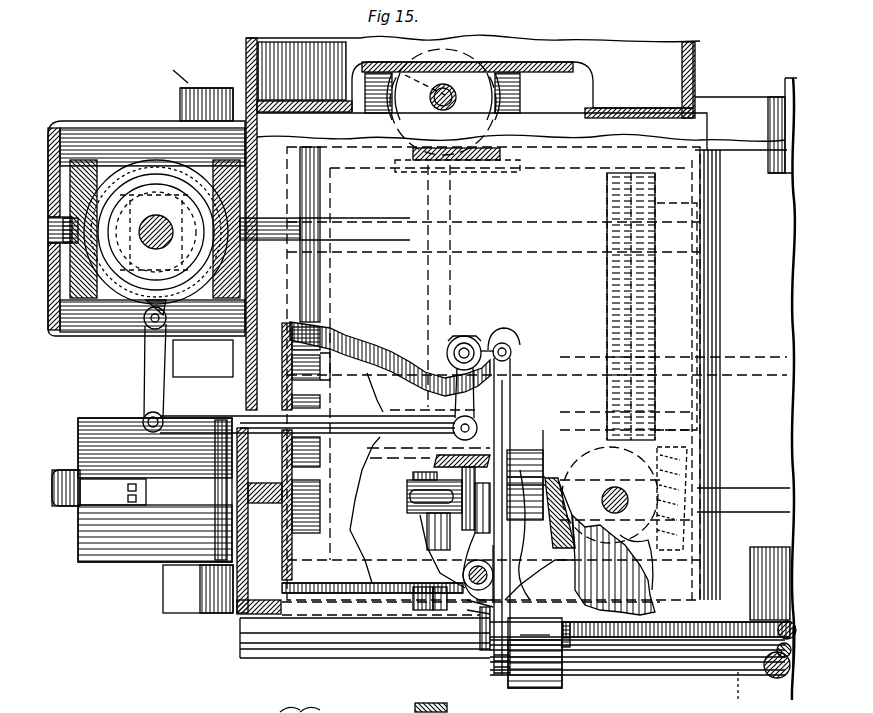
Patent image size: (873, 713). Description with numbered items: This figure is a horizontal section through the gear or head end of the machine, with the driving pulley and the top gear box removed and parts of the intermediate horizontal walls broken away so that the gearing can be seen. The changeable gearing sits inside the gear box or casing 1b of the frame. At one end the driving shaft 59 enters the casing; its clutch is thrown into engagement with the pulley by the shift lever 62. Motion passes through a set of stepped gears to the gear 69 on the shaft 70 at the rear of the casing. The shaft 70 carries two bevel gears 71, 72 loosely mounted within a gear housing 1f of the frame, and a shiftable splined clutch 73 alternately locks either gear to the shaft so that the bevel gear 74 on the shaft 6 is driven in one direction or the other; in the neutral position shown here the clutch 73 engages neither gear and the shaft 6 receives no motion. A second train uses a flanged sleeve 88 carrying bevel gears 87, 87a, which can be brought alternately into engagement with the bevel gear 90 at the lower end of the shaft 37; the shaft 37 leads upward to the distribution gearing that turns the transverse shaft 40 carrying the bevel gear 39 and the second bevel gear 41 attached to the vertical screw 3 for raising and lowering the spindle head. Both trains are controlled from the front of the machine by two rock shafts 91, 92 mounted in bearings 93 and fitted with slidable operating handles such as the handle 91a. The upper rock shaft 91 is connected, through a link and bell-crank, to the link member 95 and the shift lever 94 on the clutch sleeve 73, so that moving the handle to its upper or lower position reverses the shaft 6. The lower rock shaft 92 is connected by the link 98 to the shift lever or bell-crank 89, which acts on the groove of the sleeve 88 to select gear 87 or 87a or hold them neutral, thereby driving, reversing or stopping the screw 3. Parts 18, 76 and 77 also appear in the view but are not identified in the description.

The gear box or casing 1b is at (517, 367).
The gear housing 1f is at (97, 128).
The screw 3 is at (375, 66).
The shaft 6 is at (158, 214).
The rack 18 is at (722, 622).
The shaft 37 is at (612, 488).
The bevel gear 39 is at (380, 443).
The shaft 40 is at (455, 324).
The second bevel gear 41 is at (472, 172).
The driving shaft 59 is at (262, 492).
The shift lever 62 is at (52, 488).
The gear 69 is at (652, 283).
The shaft 70 is at (612, 214).
The bevel gear 71 is at (258, 218).
The bevel gear 72 is at (58, 188).
The shiftable splined clutch 73 is at (132, 160).
The bevel gear 74 is at (133, 293).
The link 76 is at (479, 380).
The lever 77 is at (512, 380).
The bevel gear 87 is at (541, 515).
The bevel gear 87a is at (668, 552).
The flanged sleeve 88 is at (475, 540).
The shift lever 89 is at (466, 570).
The bevel gear 90 is at (580, 565).
The rock shaft 91 is at (700, 675).
The operating handle 91a is at (747, 692).
The rock shaft 92 is at (778, 657).
The bearings 93 is at (525, 659).
The shift lever 94 is at (146, 395).
The link member 95 is at (212, 418).
The link 98 is at (510, 602).